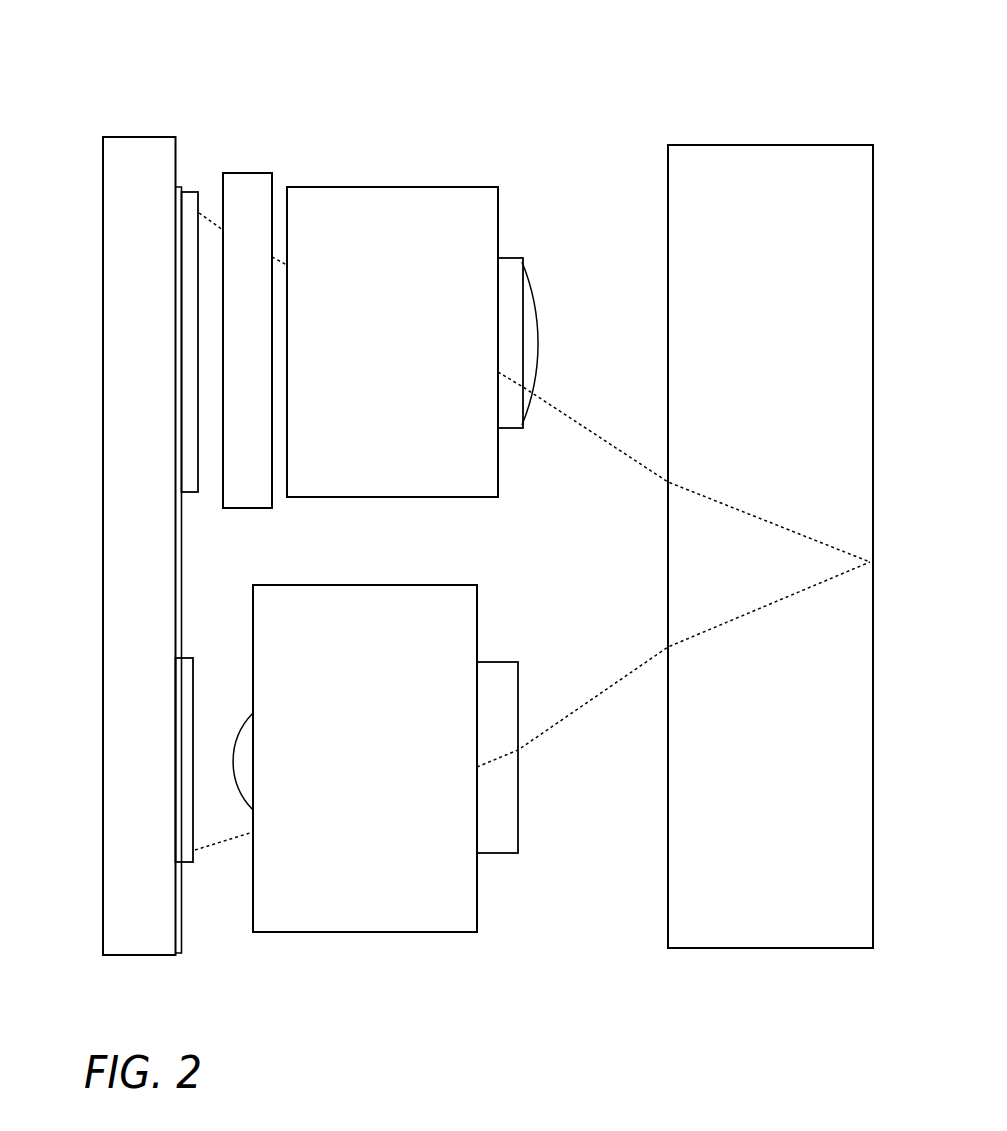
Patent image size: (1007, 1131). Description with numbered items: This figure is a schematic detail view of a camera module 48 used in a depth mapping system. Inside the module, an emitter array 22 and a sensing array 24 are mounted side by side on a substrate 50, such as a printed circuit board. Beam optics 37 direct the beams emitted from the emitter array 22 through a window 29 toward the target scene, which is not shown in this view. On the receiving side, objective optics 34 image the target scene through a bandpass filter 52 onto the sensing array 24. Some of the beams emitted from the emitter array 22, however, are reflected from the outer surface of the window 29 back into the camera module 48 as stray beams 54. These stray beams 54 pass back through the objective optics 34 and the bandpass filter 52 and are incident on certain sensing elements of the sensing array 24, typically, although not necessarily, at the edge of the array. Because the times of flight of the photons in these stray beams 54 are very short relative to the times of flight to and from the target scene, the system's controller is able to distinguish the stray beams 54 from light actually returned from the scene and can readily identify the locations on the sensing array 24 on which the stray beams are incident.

The camera module 48 is at (103, 44).
The substrate 50 is at (145, 137).
The sensing array 24 is at (198, 191).
The emitter array 22 is at (193, 666).
The bandpass filter 52 is at (252, 173).
The objective optics 34 is at (500, 200).
The beam optics 37 is at (478, 617).
The stray beams 54 is at (757, 518).
The window 29 is at (874, 490).